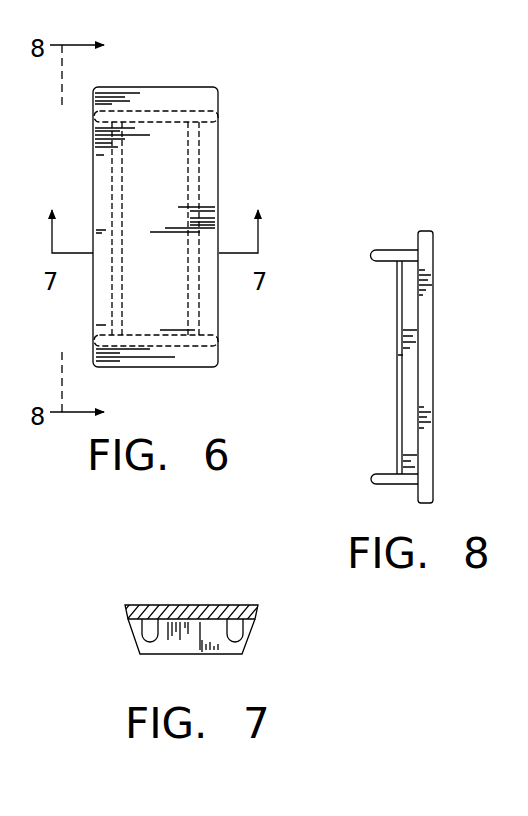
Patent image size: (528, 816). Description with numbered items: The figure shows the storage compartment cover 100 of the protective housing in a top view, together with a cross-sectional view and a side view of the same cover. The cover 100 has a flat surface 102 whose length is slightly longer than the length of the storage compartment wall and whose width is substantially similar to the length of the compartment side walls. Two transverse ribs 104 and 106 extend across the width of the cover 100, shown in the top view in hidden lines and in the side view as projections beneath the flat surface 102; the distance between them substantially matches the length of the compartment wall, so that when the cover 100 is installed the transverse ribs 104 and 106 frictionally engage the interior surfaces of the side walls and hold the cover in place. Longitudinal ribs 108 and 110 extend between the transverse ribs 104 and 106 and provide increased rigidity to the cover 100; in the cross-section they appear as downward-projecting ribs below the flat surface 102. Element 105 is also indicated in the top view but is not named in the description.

In FIG. 6, the cover 100 is at (178, 223).
In FIG. 6, the flat surface 102 is at (172, 92).
In FIG. 8, the flat surface 102 is at (433, 323).
In FIG. 7, the flat surface 102 is at (197, 605).
In FIG. 8, the transverse rib 104 is at (398, 251).
In FIG. 7, the transverse rib 104 is at (253, 637).
In FIG. 6, the upper cross member 105 is at (137, 112).
In FIG. 6, the transverse rib 106 is at (185, 346).
In FIG. 8, the transverse rib 106 is at (378, 475).
In FIG. 6, the longitudinal rib 108 is at (200, 187).
In FIG. 7, the longitudinal rib 108 is at (242, 654).
In FIG. 6, the longitudinal rib 110 is at (112, 186).
In FIG. 8, the longitudinal rib 110 is at (398, 362).
In FIG. 7, the longitudinal rib 110 is at (140, 654).